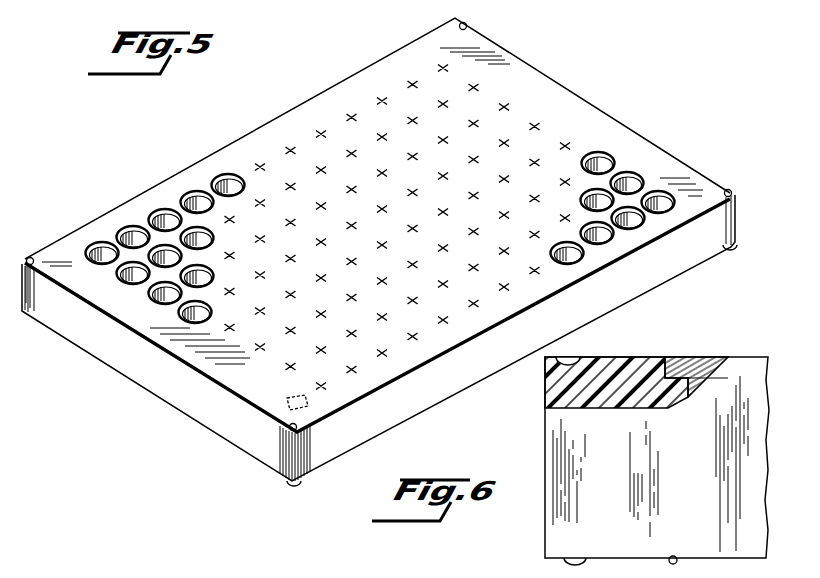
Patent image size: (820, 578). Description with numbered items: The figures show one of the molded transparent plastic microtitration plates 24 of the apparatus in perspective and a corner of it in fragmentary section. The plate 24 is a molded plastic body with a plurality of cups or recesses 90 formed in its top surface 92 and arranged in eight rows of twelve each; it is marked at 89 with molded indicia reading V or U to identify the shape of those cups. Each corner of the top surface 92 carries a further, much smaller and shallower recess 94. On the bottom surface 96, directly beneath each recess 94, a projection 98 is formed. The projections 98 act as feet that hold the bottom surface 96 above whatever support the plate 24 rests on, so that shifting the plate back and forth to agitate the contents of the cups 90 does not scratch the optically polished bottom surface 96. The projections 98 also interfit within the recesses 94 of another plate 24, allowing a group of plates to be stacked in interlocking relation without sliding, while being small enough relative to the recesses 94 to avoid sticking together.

In FIG. 5, the plate 24 is at (132, 357).
In FIG. 6, the plate 24 is at (657, 457).
In FIG. 5, the molded indicia 89 is at (312, 406).
In FIG. 5, the cups or recesses 90 is at (94, 238).
In FIG. 6, the cups or recesses 90 is at (708, 348).
In FIG. 5, the top surface 92 is at (88, 286).
In FIG. 6, the top surface 92 is at (636, 382).
In FIG. 5, the recess 94 is at (467, 26).
In FIG. 6, the recess 94 is at (584, 357).
In FIG. 5, the bottom surface 96 is at (195, 422).
In FIG. 6, the bottom surface 96 is at (675, 556).
In FIG. 5, the projection 98 is at (300, 482).
In FIG. 6, the projection 98 is at (574, 557).